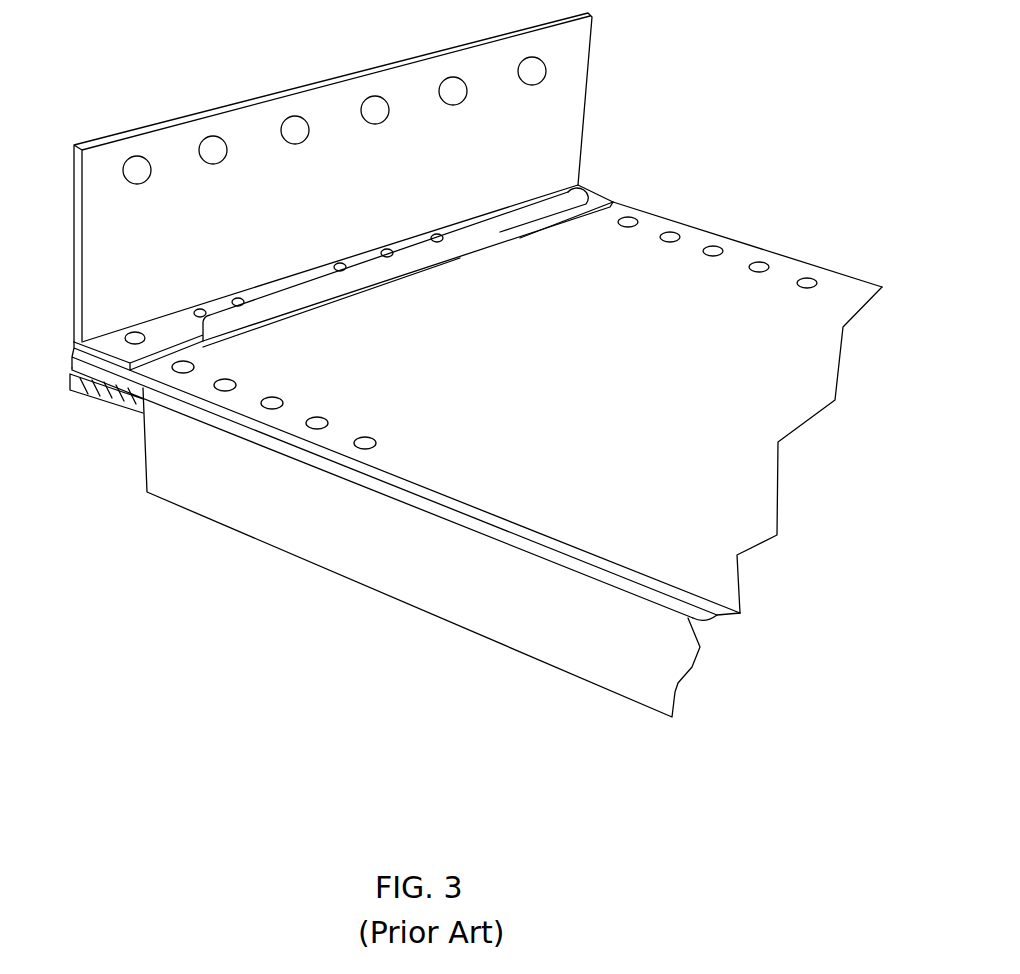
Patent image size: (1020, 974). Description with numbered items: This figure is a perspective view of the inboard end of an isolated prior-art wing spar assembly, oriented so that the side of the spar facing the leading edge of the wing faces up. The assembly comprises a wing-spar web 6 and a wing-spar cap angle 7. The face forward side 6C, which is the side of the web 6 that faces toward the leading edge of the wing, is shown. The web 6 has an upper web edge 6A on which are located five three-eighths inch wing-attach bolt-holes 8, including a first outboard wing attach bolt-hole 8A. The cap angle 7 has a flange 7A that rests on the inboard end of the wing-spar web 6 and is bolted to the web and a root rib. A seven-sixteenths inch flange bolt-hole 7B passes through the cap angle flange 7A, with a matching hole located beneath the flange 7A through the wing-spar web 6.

The wing-spar web 6 is at (695, 303).
The upper web edge 6A is at (490, 470).
The face forward side 6C is at (703, 465).
The wing-spar cap angle 7 is at (137, 223).
The flange 7A is at (167, 325).
The flange bolt-hole 7B is at (125, 337).
The wing-attach bolt-holes 8 is at (222, 390).
The first outboard wing attach bolt-hole 8A is at (365, 443).